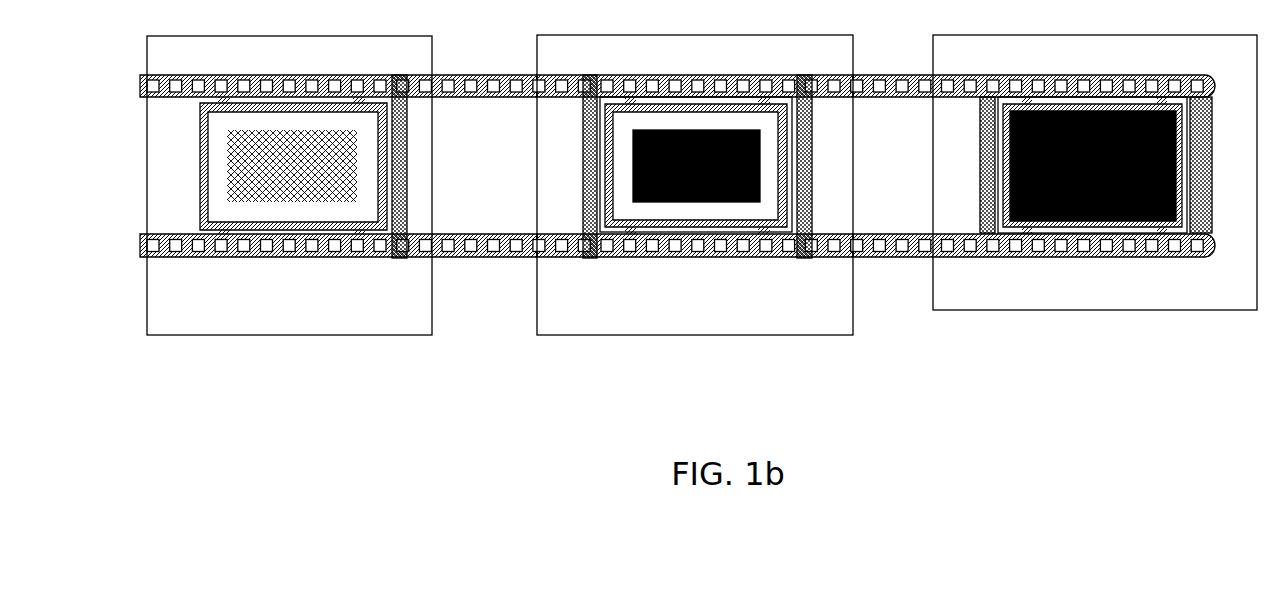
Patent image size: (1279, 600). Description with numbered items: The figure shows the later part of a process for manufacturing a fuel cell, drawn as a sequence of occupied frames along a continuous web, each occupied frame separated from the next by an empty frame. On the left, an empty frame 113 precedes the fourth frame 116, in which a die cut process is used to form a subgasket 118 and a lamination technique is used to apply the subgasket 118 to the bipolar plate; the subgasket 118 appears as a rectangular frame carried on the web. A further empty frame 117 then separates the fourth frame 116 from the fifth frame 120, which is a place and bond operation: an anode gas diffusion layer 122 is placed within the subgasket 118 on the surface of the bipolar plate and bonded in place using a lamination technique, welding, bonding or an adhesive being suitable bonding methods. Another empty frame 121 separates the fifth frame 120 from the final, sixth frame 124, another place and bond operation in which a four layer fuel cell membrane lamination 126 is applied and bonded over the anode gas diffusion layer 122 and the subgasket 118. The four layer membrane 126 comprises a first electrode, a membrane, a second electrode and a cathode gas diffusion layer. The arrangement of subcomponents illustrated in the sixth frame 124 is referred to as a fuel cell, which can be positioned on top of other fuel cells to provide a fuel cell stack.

The empty frame 113 is at (123, 283).
The fourth frame 116 is at (312, 337).
The empty frame 117 is at (505, 277).
The subgasket 118 is at (377, 257).
The fifth frame 120 is at (710, 337).
The empty frame 121 is at (878, 292).
The anode gas diffusion layer 122 is at (740, 202).
The sixth frame 124 is at (1112, 312).
The four layer fuel cell membrane lamination 126 is at (1167, 250).